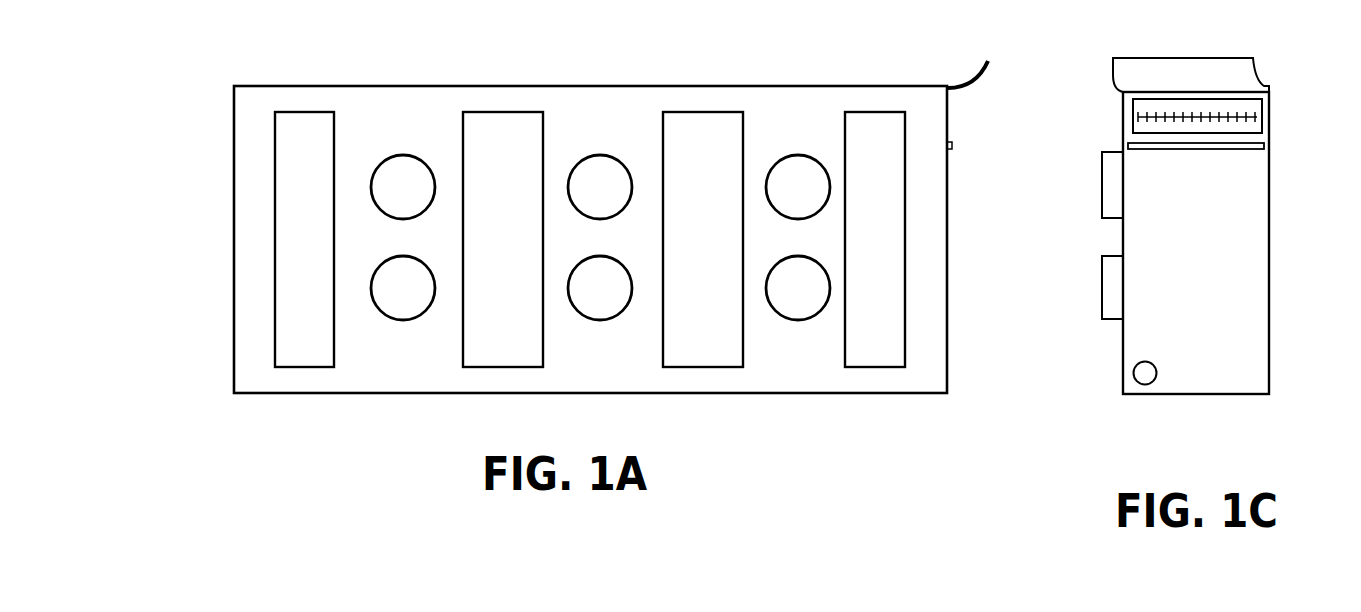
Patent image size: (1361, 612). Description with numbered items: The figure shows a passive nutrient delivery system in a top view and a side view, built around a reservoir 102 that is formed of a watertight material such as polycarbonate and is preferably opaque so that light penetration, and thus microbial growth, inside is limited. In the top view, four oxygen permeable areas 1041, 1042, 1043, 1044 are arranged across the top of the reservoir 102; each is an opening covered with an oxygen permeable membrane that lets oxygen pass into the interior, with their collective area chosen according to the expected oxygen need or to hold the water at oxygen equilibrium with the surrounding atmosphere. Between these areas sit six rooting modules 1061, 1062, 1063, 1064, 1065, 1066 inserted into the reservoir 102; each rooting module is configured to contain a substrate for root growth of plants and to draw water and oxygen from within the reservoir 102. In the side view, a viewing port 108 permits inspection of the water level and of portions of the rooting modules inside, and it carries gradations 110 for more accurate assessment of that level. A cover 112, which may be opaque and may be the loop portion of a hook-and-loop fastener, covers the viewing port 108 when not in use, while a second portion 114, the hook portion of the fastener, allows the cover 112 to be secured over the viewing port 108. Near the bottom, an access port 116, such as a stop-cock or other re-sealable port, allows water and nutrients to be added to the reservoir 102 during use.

In FIG. 1A, the reservoir 102 is at (948, 355).
In FIG. 1C, the reservoir 102 is at (1143, 394).
In FIG. 1A, the oxygen permeable area 1041 is at (307, 112).
In FIG. 1A, the oxygen permeable area 1042 is at (505, 112).
In FIG. 1A, the oxygen permeable area 1043 is at (705, 112).
In FIG. 1A, the oxygen permeable area 1044 is at (873, 112).
In FIG. 1A, the rooting module 1061 is at (426, 162).
In FIG. 1A, the rooting module 1062 is at (623, 162).
In FIG. 1A, the rooting module 1063 is at (821, 162).
In FIG. 1C, the rooting module 1063 is at (1106, 222).
In FIG. 1A, the rooting module 1064 is at (426, 312).
In FIG. 1A, the rooting module 1065 is at (623, 312).
In FIG. 1A, the rooting module 1066 is at (821, 312).
In FIG. 1C, the rooting module 1066 is at (1106, 322).
In FIG. 1C, the viewing port 108 is at (1259, 107).
In FIG. 1C, the gradations 110 is at (1252, 118).
In FIG. 1A, the cover 112 is at (962, 95).
In FIG. 1C, the cover 112 is at (1116, 80).
In FIG. 1A, the second portion 114 is at (953, 149).
In FIG. 1C, the second portion 114 is at (1166, 150).
In FIG. 1C, the access port 116 is at (1152, 365).